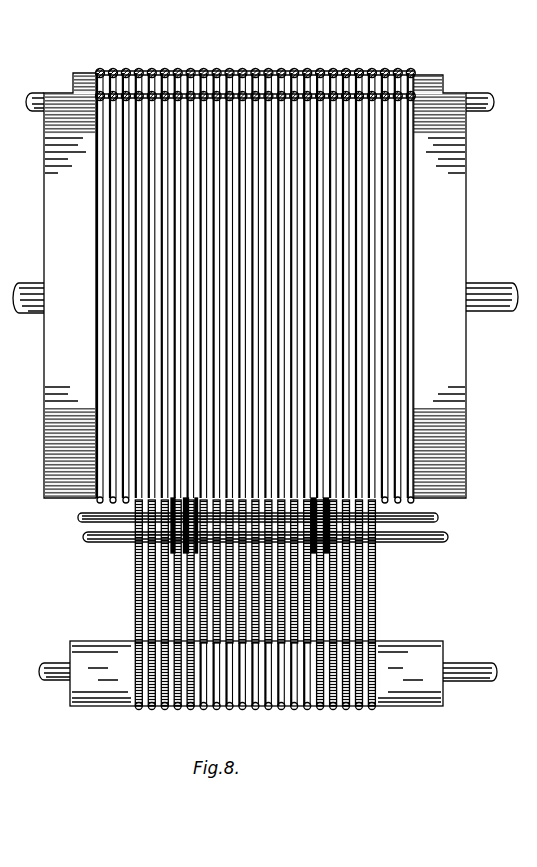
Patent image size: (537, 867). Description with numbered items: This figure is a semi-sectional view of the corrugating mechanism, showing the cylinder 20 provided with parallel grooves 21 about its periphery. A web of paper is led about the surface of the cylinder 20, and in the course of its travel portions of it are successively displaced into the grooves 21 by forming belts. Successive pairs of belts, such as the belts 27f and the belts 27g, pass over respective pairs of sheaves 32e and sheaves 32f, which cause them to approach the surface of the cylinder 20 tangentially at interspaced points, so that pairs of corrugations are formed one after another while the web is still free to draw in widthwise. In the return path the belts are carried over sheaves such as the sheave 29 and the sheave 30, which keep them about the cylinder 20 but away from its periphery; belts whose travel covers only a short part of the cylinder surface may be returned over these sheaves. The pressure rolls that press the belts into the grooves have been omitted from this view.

The cylinder 20 is at (447, 415).
The parallel grooves 21 is at (403, 337).
The sheave 29 is at (437, 66).
The sheave 30 is at (408, 648).
The belts 27f is at (165, 608).
The belts 27g is at (168, 588).
The sheaves 32e is at (162, 547).
The sheaves 32f is at (77, 521).